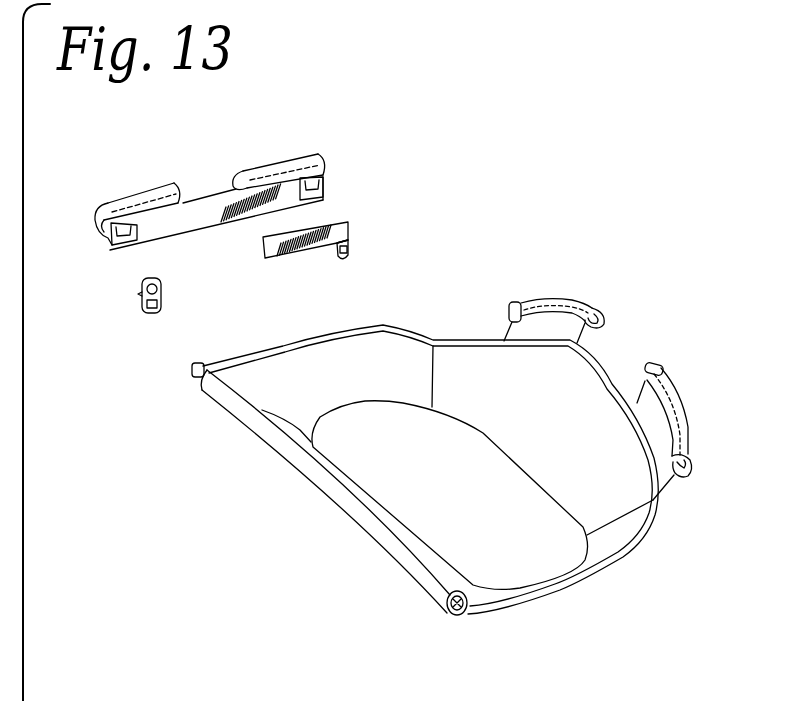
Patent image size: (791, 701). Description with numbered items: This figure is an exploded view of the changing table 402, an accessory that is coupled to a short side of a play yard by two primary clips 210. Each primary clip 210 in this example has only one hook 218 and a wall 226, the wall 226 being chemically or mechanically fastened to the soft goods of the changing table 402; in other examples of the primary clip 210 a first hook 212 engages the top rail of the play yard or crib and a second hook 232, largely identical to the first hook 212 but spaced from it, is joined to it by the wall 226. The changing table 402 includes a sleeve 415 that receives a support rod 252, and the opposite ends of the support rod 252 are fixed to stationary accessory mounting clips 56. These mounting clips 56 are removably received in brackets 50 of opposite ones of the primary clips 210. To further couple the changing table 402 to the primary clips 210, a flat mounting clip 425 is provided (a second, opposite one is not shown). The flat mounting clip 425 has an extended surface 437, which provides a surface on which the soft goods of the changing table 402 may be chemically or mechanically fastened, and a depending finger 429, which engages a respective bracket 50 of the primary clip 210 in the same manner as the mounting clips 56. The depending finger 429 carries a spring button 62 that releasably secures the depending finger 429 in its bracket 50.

The changing table 402 is at (427, 335).
The sleeve 415 is at (333, 492).
The support rod 252 is at (463, 612).
The primary clip 210 is at (137, 195).
The hook 218 is at (607, 317).
The wall 226 is at (641, 383).
The hook 212 is at (93, 218).
The extended surface 437 is at (286, 236).
The second hook 232 is at (298, 152).
The bracket 50 is at (330, 177).
The flat mounting clip 425 is at (353, 221).
The depending finger 429 is at (358, 237).
The spring button 62 is at (355, 247).
The mounting clip 56 is at (145, 288).